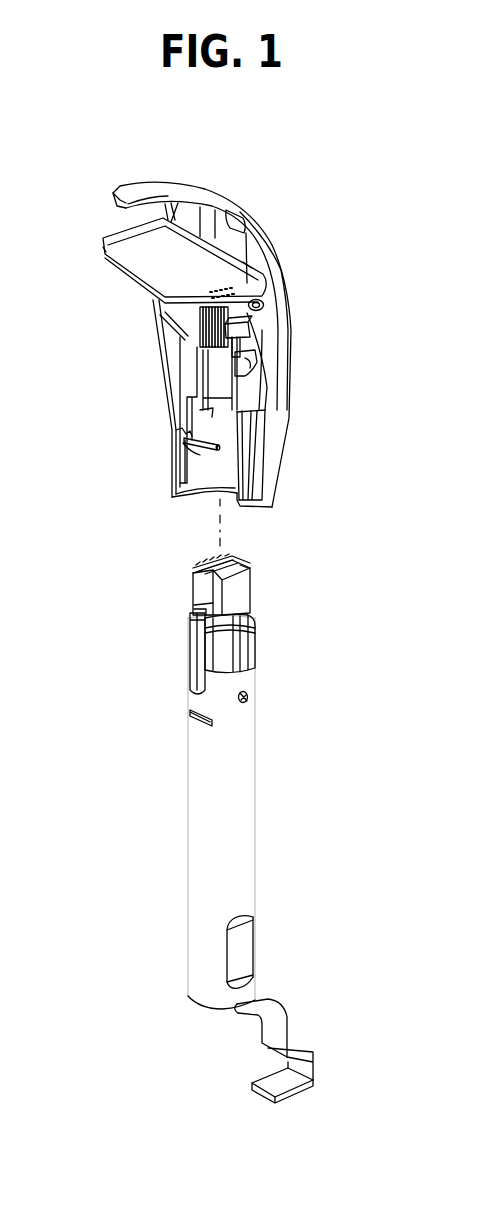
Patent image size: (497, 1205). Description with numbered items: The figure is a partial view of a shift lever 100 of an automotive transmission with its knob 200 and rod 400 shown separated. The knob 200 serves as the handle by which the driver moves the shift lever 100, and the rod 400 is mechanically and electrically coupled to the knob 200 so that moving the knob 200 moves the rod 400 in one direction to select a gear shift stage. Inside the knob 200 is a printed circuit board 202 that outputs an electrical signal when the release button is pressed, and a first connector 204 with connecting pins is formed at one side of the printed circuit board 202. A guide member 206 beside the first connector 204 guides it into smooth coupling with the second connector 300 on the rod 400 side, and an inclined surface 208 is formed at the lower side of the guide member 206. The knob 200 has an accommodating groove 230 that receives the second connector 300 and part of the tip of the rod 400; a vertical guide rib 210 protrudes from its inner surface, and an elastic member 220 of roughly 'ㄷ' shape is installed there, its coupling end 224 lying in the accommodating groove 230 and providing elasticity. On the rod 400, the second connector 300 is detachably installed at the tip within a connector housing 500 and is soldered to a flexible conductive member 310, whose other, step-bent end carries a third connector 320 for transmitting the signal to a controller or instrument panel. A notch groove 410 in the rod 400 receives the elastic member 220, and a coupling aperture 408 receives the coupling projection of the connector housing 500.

The shift lever 100 is at (247, 139).
The knob 200 is at (202, 344).
The printed circuit board 202 is at (130, 265).
The first connector 204 is at (198, 335).
The guide member 206 is at (250, 338).
The inclined surface 208 is at (256, 366).
The guide rib 210 is at (236, 417).
The elastic member 220 is at (186, 446).
The coupling end 224 is at (208, 450).
The accommodating groove 230 is at (200, 410).
The second connector 300 is at (232, 560).
The conductive member 310 is at (260, 1004).
The third connector 320 is at (292, 1090).
The rod 400 is at (250, 817).
The coupling aperture 408 is at (248, 702).
The notch groove 410 is at (190, 720).
The connector housing 500 is at (250, 600).